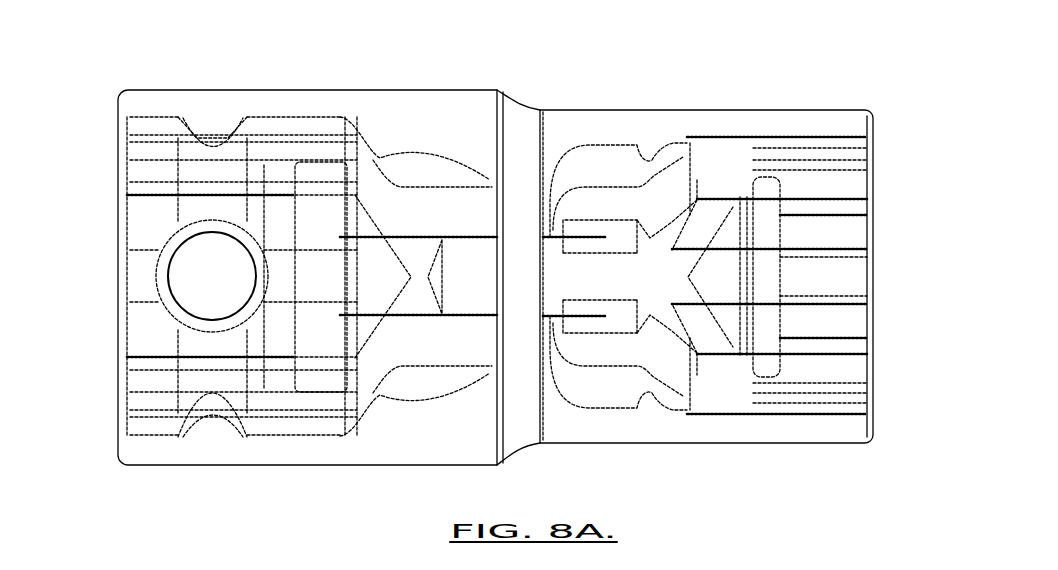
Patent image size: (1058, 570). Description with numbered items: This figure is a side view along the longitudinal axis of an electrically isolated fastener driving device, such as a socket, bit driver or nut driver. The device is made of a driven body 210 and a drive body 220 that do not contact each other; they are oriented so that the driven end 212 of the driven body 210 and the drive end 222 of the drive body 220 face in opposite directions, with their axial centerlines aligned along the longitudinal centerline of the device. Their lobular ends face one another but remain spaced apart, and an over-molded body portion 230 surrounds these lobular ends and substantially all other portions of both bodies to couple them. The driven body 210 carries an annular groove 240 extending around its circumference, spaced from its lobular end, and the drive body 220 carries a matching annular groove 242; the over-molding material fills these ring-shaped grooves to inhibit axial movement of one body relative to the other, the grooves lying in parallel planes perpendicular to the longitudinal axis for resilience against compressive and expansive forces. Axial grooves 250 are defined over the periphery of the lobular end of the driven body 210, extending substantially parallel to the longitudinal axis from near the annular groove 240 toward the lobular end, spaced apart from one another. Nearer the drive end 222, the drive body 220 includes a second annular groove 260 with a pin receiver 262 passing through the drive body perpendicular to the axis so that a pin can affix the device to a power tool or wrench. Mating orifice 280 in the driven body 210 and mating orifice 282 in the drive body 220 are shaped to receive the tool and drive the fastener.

The driven body 210 is at (787, 411).
The driven end 212 is at (873, 401).
The drive body 220 is at (307, 440).
The drive end 222 is at (119, 176).
The body portion 230 is at (472, 90).
The annular groove 240 is at (660, 143).
The annular groove 242 is at (393, 405).
The axial grooves 250 is at (448, 166).
The second annular groove 260 is at (216, 432).
The pin receiver 262 is at (207, 262).
The mating orifice 280 is at (830, 266).
The mating orifice 282 is at (160, 332).